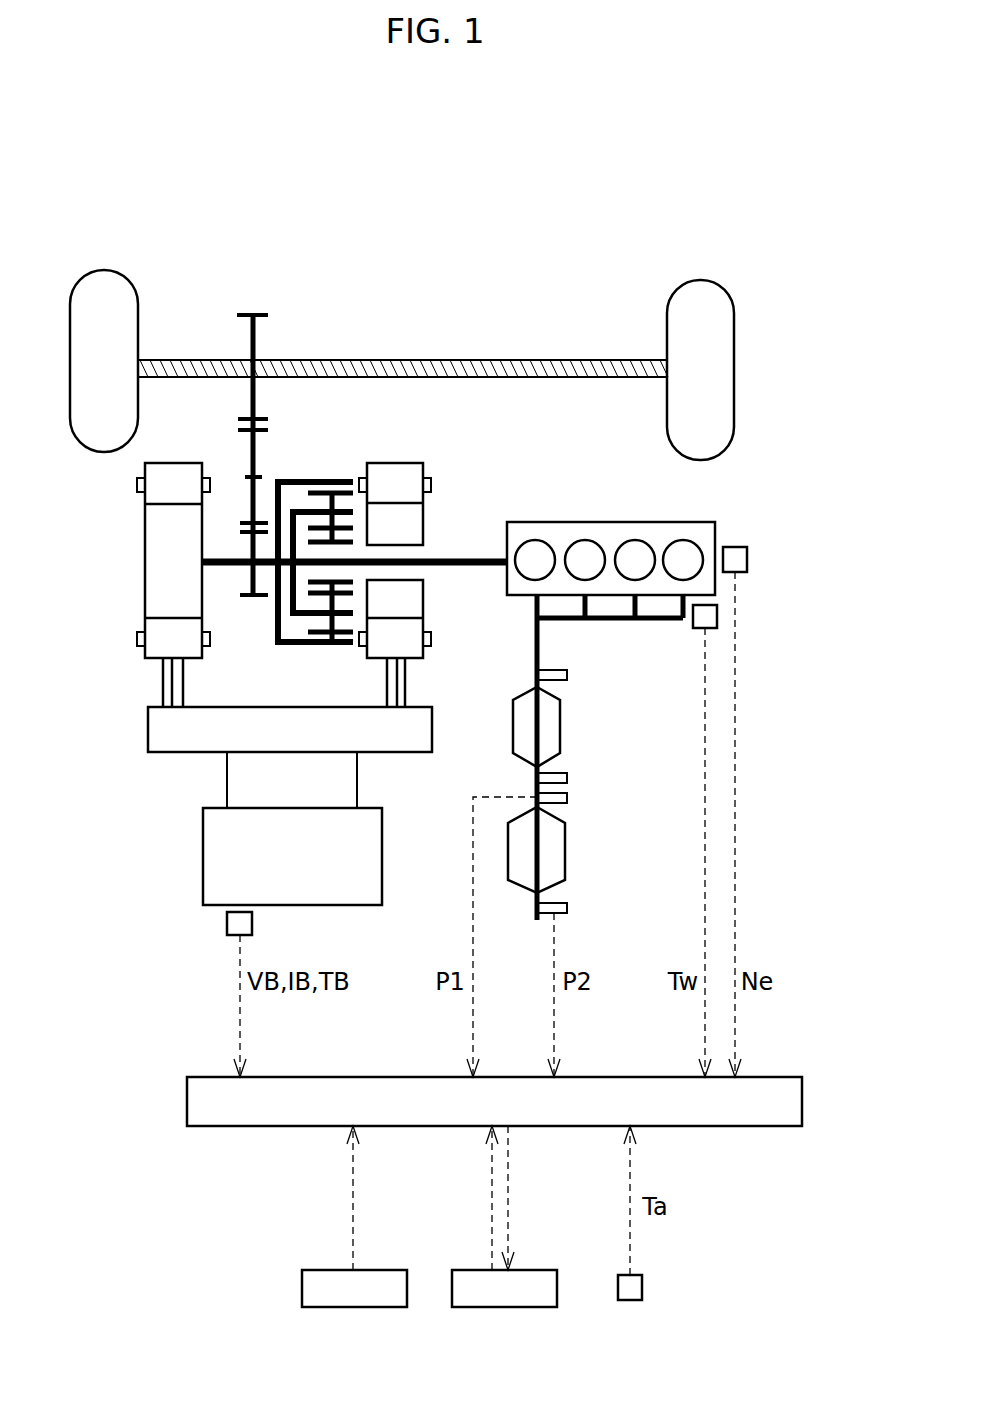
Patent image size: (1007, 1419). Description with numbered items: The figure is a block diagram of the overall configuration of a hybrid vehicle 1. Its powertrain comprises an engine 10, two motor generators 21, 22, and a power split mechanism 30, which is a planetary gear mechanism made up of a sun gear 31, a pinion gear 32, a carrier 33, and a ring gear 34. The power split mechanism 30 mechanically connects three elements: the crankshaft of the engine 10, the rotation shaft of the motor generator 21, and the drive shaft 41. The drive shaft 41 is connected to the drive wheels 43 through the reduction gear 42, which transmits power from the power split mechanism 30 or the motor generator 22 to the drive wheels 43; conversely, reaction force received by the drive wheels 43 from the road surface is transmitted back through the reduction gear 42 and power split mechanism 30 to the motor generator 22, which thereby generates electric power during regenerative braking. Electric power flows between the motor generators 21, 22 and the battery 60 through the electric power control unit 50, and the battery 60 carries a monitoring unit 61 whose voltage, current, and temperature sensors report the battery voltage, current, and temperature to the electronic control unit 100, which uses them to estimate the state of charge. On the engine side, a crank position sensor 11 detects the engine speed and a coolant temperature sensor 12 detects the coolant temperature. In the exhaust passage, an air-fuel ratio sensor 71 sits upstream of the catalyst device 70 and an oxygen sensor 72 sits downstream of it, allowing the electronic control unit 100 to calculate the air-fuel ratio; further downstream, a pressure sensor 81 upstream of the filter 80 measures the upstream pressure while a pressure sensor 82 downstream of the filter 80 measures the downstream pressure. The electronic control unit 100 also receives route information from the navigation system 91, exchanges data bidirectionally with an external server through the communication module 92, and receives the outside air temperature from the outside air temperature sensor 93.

The vehicle 1 is at (250, 176).
The engine 10 is at (633, 522).
The crank position sensor 11 is at (735, 547).
The coolant temperature sensor 12 is at (700, 630).
The motor generator 21 is at (403, 463).
The motor generator 22 is at (178, 463).
The power split mechanism 30 is at (344, 465).
The sun gear 31 is at (310, 578).
The pinion gear 32 is at (342, 646).
The carrier 33 is at (302, 600).
The ring gear 34 is at (328, 482).
The drive shaft 41 is at (230, 567).
The reduction gear 42 is at (253, 313).
The drive wheels 43 is at (720, 284).
The electric power control unit 50 is at (148, 730).
The battery 60 is at (203, 857).
The monitoring unit 61 is at (252, 925).
The catalyst device 70 is at (560, 727).
The air-fuel ratio sensor 71 is at (567, 675).
The oxygen sensor 72 is at (567, 778).
The filter 80 is at (565, 855).
The pressure sensor 81 is at (567, 799).
The pressure sensor 82 is at (567, 908).
The navigation system 91 is at (380, 1270).
The communication module 92 is at (530, 1270).
The outside air temperature sensor 93 is at (642, 1290).
The electronic control unit 100 is at (757, 1077).